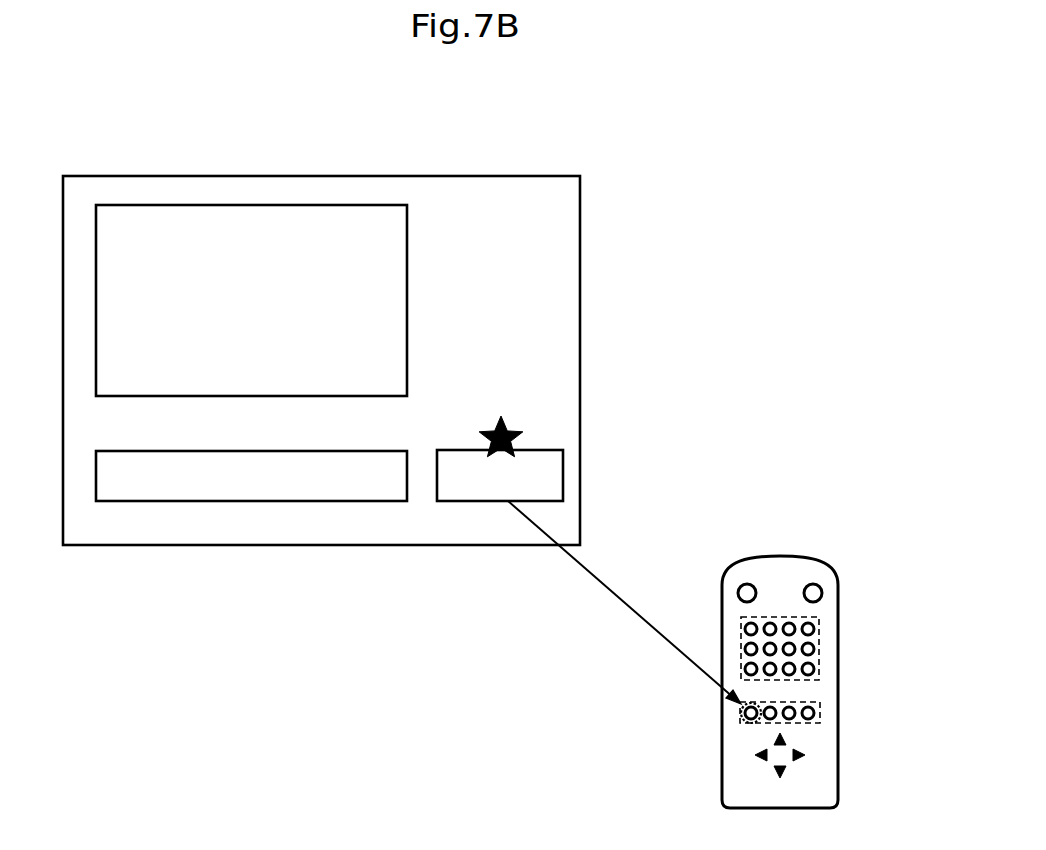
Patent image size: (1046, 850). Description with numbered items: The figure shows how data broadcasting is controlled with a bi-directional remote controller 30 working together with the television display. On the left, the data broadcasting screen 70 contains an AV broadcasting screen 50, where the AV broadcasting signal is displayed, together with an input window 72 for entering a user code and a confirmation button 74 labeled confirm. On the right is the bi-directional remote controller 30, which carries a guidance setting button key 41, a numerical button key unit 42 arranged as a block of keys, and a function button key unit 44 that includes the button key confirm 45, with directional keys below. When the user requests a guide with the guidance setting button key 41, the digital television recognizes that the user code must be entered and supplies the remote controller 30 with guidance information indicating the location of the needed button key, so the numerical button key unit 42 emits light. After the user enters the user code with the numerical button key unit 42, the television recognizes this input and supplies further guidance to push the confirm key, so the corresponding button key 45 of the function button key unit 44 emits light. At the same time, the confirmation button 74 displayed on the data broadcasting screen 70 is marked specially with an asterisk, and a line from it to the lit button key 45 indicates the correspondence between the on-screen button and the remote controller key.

The bi-directional remote controller 30 is at (820, 567).
The guidance setting button key 41 is at (822, 593).
The numerical button key unit 42 is at (740, 630).
The function button key unit 44 is at (820, 710).
The button key 'confirm' 45 is at (742, 720).
The AV broadcasting screen 50 is at (272, 206).
The data broadcasting screen 70 is at (580, 248).
The input window 72 is at (247, 501).
The confirmation button 74 is at (563, 470).